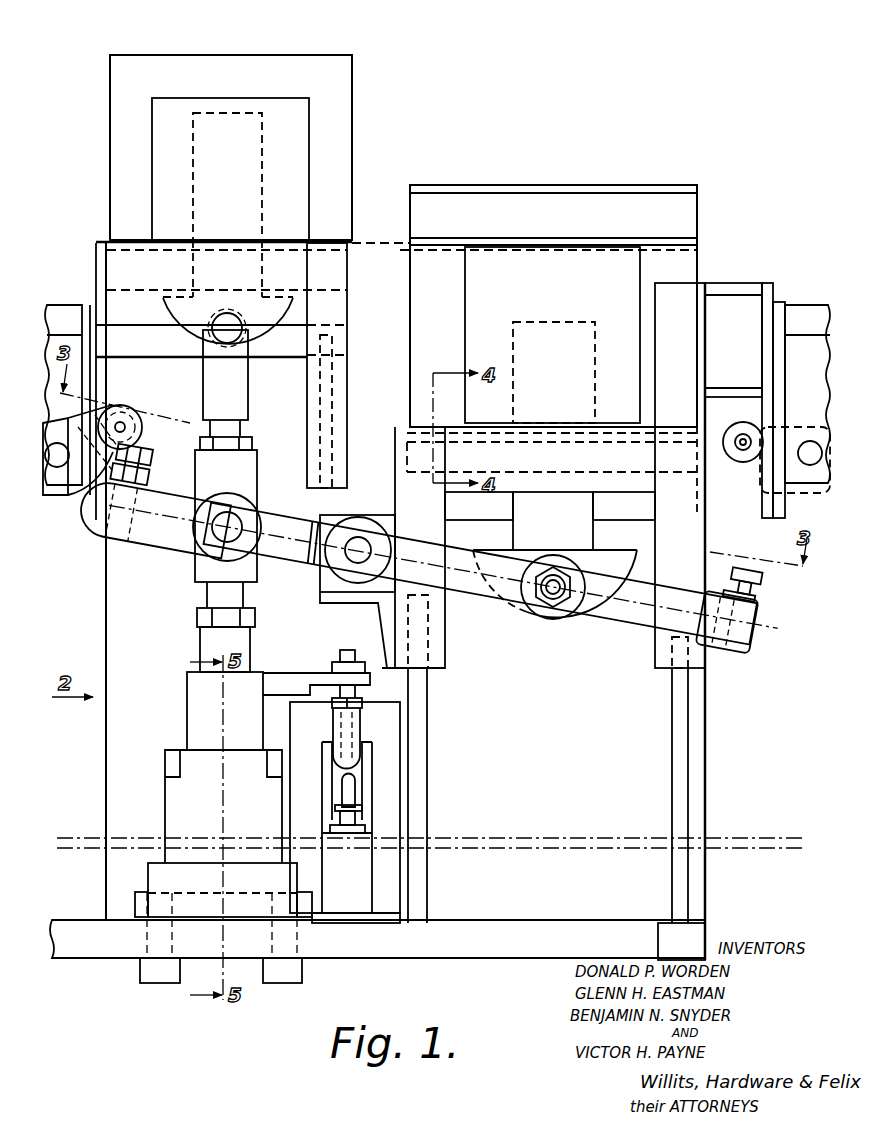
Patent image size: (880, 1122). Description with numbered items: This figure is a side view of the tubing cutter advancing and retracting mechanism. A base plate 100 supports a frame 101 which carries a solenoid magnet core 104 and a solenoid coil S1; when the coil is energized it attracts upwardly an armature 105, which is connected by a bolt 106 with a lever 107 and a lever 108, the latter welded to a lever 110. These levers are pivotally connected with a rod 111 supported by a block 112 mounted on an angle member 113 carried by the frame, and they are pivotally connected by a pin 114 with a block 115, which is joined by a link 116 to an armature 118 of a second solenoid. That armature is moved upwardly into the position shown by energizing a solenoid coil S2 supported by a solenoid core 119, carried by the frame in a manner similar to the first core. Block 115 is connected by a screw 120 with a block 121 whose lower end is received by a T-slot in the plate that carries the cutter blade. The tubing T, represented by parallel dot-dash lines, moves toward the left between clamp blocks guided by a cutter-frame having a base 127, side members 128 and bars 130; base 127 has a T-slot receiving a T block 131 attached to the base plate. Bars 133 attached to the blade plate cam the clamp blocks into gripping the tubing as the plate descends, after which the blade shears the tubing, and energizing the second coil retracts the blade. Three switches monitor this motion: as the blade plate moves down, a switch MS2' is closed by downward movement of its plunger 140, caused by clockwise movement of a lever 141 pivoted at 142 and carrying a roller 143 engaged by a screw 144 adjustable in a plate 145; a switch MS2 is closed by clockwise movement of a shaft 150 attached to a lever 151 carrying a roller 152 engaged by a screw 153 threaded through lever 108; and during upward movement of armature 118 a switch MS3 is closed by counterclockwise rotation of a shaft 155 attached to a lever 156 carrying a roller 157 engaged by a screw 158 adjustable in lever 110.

The solenoid coil S1 is at (583, 250).
The solenoid coil S2 is at (272, 100).
The switch MS2 is at (809, 368).
The switch MS2' is at (392, 812).
The switch MS3 is at (63, 340).
The tubing T is at (536, 822).
The base plate 100 is at (596, 905).
The frame 101 is at (384, 244).
The solenoid magnet core 104 is at (513, 528).
The armature 105 is at (637, 548).
The bolt 106 is at (552, 606).
The lever 107 is at (495, 610).
The lever 108 is at (758, 635).
The lever 110 is at (92, 540).
The rod 111 is at (357, 537).
The block 112 is at (320, 593).
The angle member 113 is at (330, 610).
The pin 114 is at (235, 520).
The block 115 is at (196, 575).
The link 116 is at (248, 388).
The armature 118 is at (165, 312).
The solenoid core 119 is at (345, 90).
The screw 120 is at (200, 612).
The block 121 is at (200, 655).
The base 127 is at (160, 872).
The side members 128 is at (175, 806).
The bars 130 is at (170, 756).
The T block 131 is at (135, 901).
The bars 133 is at (190, 692).
The plunger 140 is at (352, 803).
The lever 141 is at (356, 781).
The pivot 142 is at (372, 750).
The roller 143 is at (348, 731).
The screw 144 is at (362, 703).
The plate 145 is at (370, 680).
The shaft 150 is at (810, 465).
The lever 151 is at (745, 440).
The roller 152 is at (740, 458).
The screw 153 is at (762, 585).
The shaft 155 is at (60, 468).
The lever 156 is at (90, 407).
The roller 157 is at (137, 417).
The screw 158 is at (150, 450).